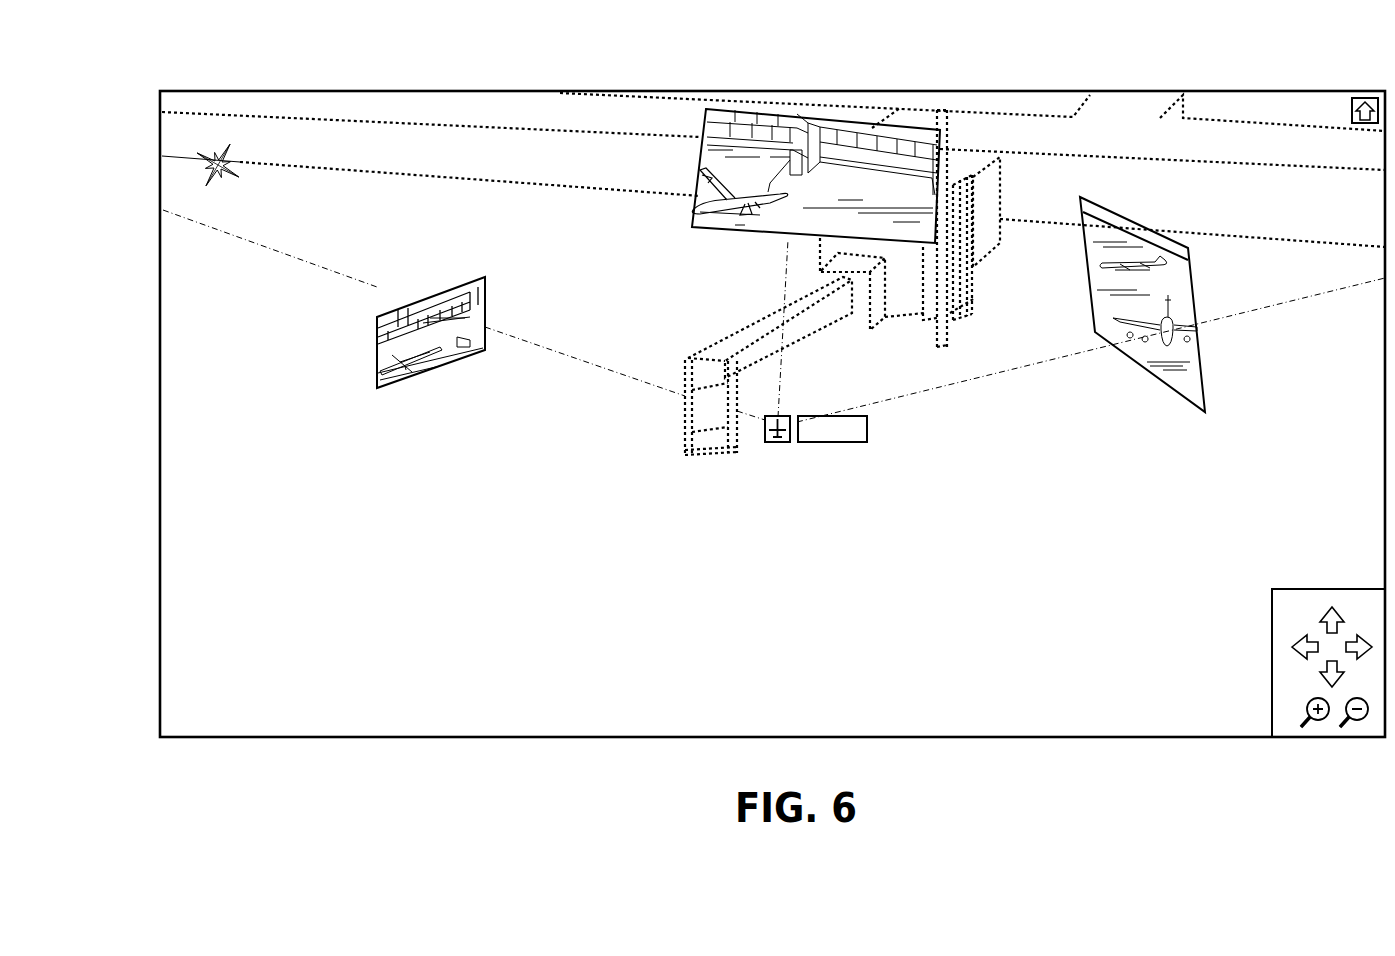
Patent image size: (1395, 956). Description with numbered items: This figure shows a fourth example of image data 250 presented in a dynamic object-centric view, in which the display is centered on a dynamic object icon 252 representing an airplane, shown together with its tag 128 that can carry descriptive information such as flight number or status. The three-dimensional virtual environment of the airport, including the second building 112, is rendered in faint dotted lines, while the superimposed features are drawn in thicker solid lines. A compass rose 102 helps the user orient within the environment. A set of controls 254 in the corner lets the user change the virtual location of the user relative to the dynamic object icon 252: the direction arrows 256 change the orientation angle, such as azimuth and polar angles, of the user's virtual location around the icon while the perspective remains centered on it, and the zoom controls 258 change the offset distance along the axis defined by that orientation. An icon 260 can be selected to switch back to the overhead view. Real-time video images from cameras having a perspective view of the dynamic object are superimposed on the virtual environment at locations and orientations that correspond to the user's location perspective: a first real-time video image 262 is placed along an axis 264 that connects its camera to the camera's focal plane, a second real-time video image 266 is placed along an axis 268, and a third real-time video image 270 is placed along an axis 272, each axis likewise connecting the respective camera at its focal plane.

The image data 250 is at (256, 40).
The icon 260 is at (1360, 97).
The third real-time video image 270 is at (698, 183).
The axis 272 is at (785, 288).
The second building 112 is at (737, 328).
The axis 264 is at (533, 344).
The compass rose 102 is at (288, 210).
The first real-time video image 262 is at (377, 347).
The second real-time video image 266 is at (1195, 295).
The axis 268 is at (1085, 353).
The dynamic object icon 252 is at (778, 442).
The tag 128 is at (827, 443).
The set of controls 254 is at (1313, 588).
The direction arrows 256 is at (1306, 611).
The zoom controls 258 is at (1289, 690).